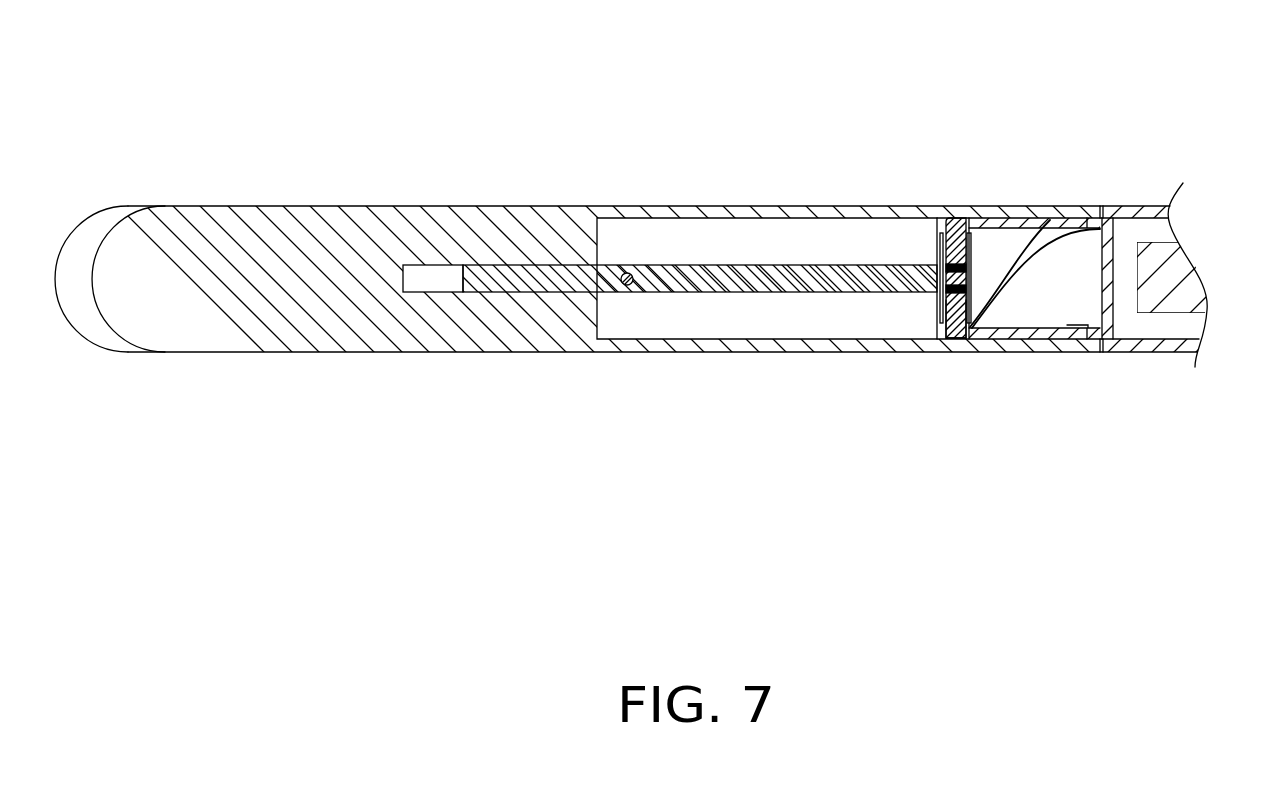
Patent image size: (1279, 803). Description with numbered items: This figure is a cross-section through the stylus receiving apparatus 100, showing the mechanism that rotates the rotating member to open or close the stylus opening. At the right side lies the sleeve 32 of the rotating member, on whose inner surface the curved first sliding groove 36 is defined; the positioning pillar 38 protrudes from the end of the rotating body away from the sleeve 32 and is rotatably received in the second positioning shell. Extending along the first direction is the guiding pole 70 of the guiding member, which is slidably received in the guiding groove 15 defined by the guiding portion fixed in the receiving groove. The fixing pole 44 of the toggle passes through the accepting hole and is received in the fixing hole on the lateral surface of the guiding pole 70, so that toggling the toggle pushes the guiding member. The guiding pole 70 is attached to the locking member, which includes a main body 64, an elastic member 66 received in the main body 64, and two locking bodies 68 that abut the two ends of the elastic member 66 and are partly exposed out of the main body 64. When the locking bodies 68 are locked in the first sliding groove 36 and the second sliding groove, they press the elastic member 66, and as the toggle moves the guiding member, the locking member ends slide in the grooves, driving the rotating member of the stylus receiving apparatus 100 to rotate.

The stylus receiving apparatus 100 is at (683, 91).
The guiding groove 15 is at (432, 278).
The guiding pole 70 is at (505, 277).
The fixing pole 44 is at (630, 275).
The first sliding groove 36 is at (950, 217).
The positioning pillar 38 is at (951, 340).
The locking bodies 68 is at (946, 235).
The elastic member 66 is at (967, 268).
The main body 64 is at (967, 282).
The sleeve 32 is at (1037, 332).